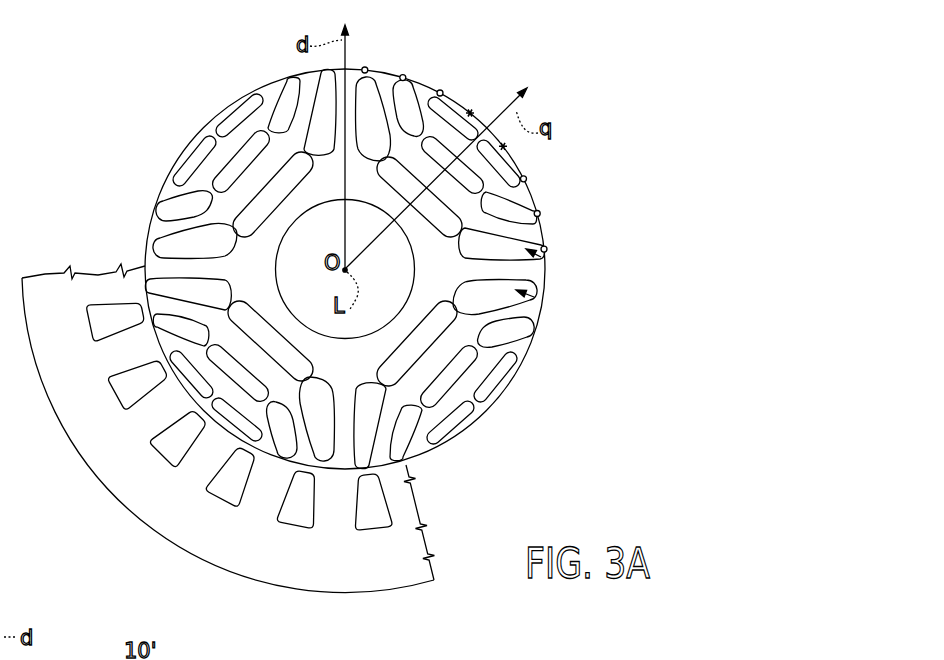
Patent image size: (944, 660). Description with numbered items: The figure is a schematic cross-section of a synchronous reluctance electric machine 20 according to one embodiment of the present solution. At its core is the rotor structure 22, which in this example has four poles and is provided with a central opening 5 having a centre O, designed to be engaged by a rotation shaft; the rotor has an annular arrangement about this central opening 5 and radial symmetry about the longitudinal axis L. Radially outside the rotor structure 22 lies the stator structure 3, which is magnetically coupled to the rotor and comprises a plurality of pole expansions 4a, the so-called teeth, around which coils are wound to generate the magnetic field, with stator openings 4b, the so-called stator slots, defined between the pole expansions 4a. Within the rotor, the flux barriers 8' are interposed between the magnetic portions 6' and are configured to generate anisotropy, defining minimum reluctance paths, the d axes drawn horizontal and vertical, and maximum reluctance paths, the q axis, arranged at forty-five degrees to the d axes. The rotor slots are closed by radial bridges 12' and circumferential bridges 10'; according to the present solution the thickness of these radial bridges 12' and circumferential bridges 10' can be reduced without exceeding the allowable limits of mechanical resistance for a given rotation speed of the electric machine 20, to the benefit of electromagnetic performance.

The electric machine 20 is at (393, 264).
The rotor structure 22 is at (264, 279).
The central opening 5 is at (390, 309).
The magnetic portions 6' is at (479, 163).
The flux barriers 8' is at (563, 270).
The circumferential bridges 10' is at (476, 373).
The radial bridges 12' is at (227, 163).
The stator structure 3 is at (145, 534).
The pole expansions 4a is at (334, 517).
The stator openings 4b is at (302, 519).